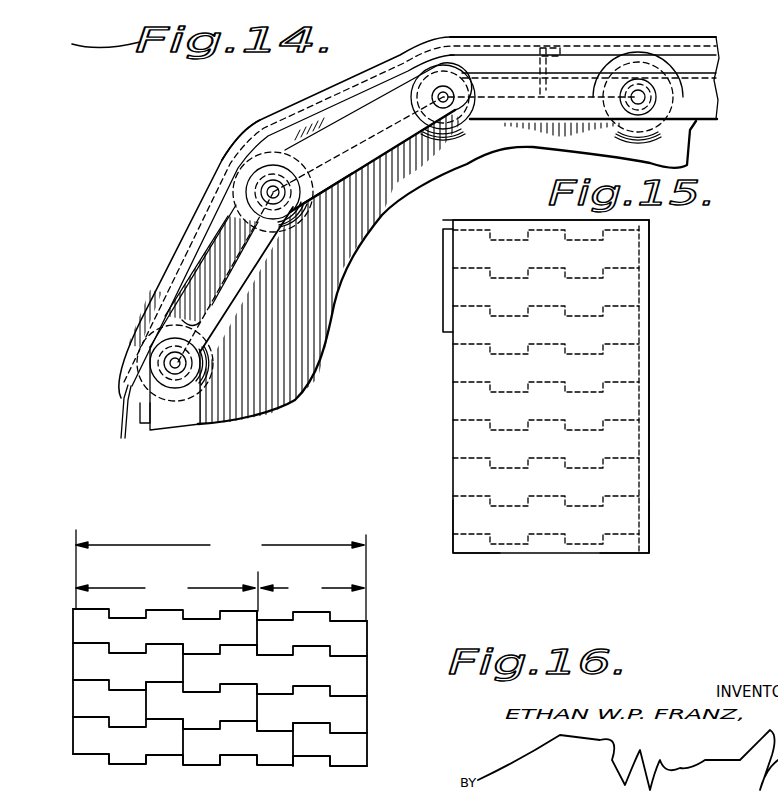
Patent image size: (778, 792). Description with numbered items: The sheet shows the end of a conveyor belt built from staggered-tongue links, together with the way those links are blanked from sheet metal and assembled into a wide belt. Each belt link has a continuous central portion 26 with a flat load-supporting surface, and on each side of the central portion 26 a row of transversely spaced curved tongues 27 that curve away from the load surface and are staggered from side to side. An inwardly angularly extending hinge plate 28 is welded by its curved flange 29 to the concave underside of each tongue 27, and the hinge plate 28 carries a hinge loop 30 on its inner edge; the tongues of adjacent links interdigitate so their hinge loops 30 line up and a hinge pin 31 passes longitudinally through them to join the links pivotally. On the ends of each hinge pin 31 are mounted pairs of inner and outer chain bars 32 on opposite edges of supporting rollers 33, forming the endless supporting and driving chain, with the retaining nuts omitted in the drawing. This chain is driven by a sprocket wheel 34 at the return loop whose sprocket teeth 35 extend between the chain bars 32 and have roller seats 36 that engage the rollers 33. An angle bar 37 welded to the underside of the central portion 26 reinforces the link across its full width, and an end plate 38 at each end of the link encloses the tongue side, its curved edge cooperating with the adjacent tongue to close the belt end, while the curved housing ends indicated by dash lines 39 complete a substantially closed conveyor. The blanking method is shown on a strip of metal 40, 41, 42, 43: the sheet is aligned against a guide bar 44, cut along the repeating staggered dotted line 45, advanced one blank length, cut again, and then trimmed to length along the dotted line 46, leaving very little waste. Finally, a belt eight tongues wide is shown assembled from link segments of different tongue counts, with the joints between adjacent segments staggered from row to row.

In FIG. 14, the central portion 26 is at (545, 44).
In FIG. 16, the central portion 26 is at (90, 660).
In FIG. 16, the curved tongues 27 is at (352, 765).
In FIG. 14, the hinge plate 28 is at (227, 160).
In FIG. 14, the curved flange 29 is at (222, 171).
In FIG. 14, the hinge loop 30 is at (298, 178).
In FIG. 14, the hinge pin 31 is at (403, 108).
In FIG. 14, the chain bars 32 is at (352, 165).
In FIG. 14, the supporting rollers 33 is at (472, 128).
In FIG. 14, the sprocket wheels 34 is at (328, 275).
In FIG. 14, the sprocket teeth 35 is at (188, 278).
In FIG. 14, the roller seats 36 is at (691, 140).
In FIG. 14, the angle bar 37 is at (540, 86).
In FIG. 14, the end plate 38 is at (372, 63).
In FIG. 14, the housing 39 is at (118, 430).
In FIG. 15, the strip of metal 40 is at (452, 223).
In FIG. 15, the strip of metal 41 is at (652, 222).
In FIG. 15, the strip of metal 42 is at (651, 553).
In FIG. 15, the strip of metal 43 is at (453, 555).
In FIG. 15, the guide bar 44 is at (446, 311).
In FIG. 15, the dotted line 45 is at (483, 231).
In FIG. 15, the dotted line 46 is at (650, 258).